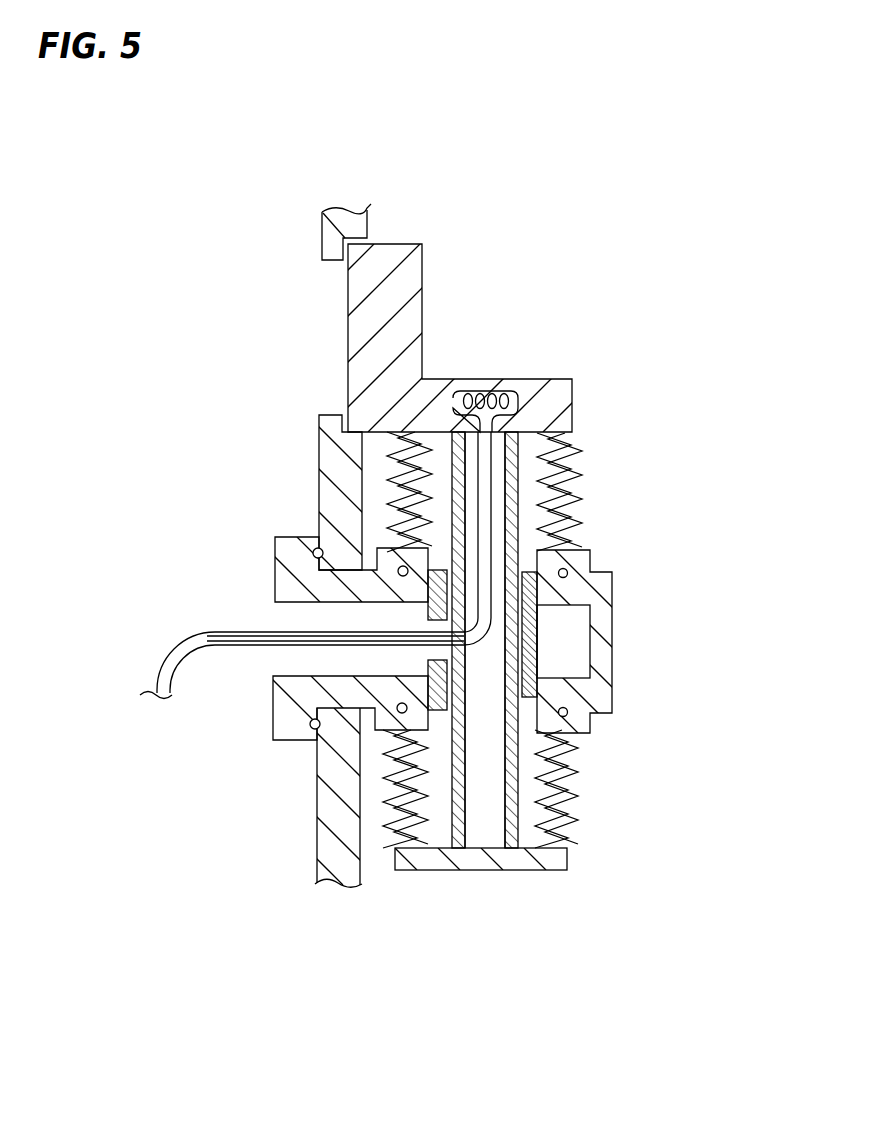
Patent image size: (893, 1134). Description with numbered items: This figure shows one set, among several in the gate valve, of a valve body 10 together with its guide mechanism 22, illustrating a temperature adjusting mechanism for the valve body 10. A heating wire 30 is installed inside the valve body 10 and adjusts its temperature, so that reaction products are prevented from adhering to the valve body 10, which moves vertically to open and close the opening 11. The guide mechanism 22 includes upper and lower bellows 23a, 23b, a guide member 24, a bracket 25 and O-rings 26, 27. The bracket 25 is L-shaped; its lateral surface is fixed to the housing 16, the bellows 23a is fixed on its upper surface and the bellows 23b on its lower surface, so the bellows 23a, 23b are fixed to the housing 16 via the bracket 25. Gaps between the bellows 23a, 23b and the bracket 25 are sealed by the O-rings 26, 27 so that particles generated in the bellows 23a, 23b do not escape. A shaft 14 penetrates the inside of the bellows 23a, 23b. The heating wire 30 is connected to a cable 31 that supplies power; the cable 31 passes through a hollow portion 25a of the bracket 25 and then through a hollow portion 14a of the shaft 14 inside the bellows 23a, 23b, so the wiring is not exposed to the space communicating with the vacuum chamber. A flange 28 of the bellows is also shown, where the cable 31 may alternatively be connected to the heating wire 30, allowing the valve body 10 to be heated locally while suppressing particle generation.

The valve body 10 is at (413, 280).
The opening 11 is at (330, 300).
The shaft 14 is at (515, 836).
The hollow portion 14a is at (480, 835).
The housing 16 is at (323, 227).
The guide mechanism 22 is at (708, 520).
The bellows 23a is at (583, 507).
The bellows 23b is at (579, 793).
The guide member 24 is at (538, 638).
The bracket 25 is at (612, 588).
The hollow portion 25a is at (342, 620).
The O-ring 26 is at (568, 571).
The O-ring 27 is at (568, 710).
The flange 28 is at (312, 728).
The heating wire 30 is at (490, 397).
The cable 31 is at (227, 638).